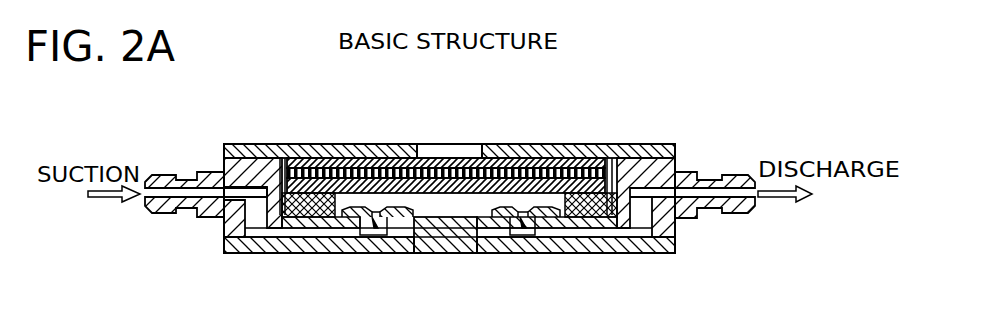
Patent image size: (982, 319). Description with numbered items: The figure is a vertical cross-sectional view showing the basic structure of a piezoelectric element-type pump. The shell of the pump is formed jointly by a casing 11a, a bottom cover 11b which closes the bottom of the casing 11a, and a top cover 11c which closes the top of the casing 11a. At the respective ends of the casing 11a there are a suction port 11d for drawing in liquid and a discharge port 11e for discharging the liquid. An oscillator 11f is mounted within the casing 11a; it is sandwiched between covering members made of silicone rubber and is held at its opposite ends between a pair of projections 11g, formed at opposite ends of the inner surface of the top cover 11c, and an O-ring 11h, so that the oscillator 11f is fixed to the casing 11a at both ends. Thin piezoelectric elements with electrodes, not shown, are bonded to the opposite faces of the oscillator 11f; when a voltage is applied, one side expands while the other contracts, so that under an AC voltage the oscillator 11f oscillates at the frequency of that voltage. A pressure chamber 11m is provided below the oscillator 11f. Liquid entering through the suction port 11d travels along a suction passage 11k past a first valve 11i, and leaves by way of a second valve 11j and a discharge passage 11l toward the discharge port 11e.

The casing 11a is at (223, 158).
The bottom cover 11b is at (224, 242).
The top cover 11c is at (663, 157).
The suction port 11d is at (150, 214).
The discharge port 11e is at (731, 214).
The oscillator 11f is at (448, 146).
The projections 11g is at (297, 147).
The O-ring 11h is at (633, 232).
The first valve 11i is at (392, 232).
The second valve 11j is at (528, 236).
The suction passage 11k is at (303, 238).
The discharge passage 11l is at (599, 242).
The pressure chamber 11m is at (494, 170).